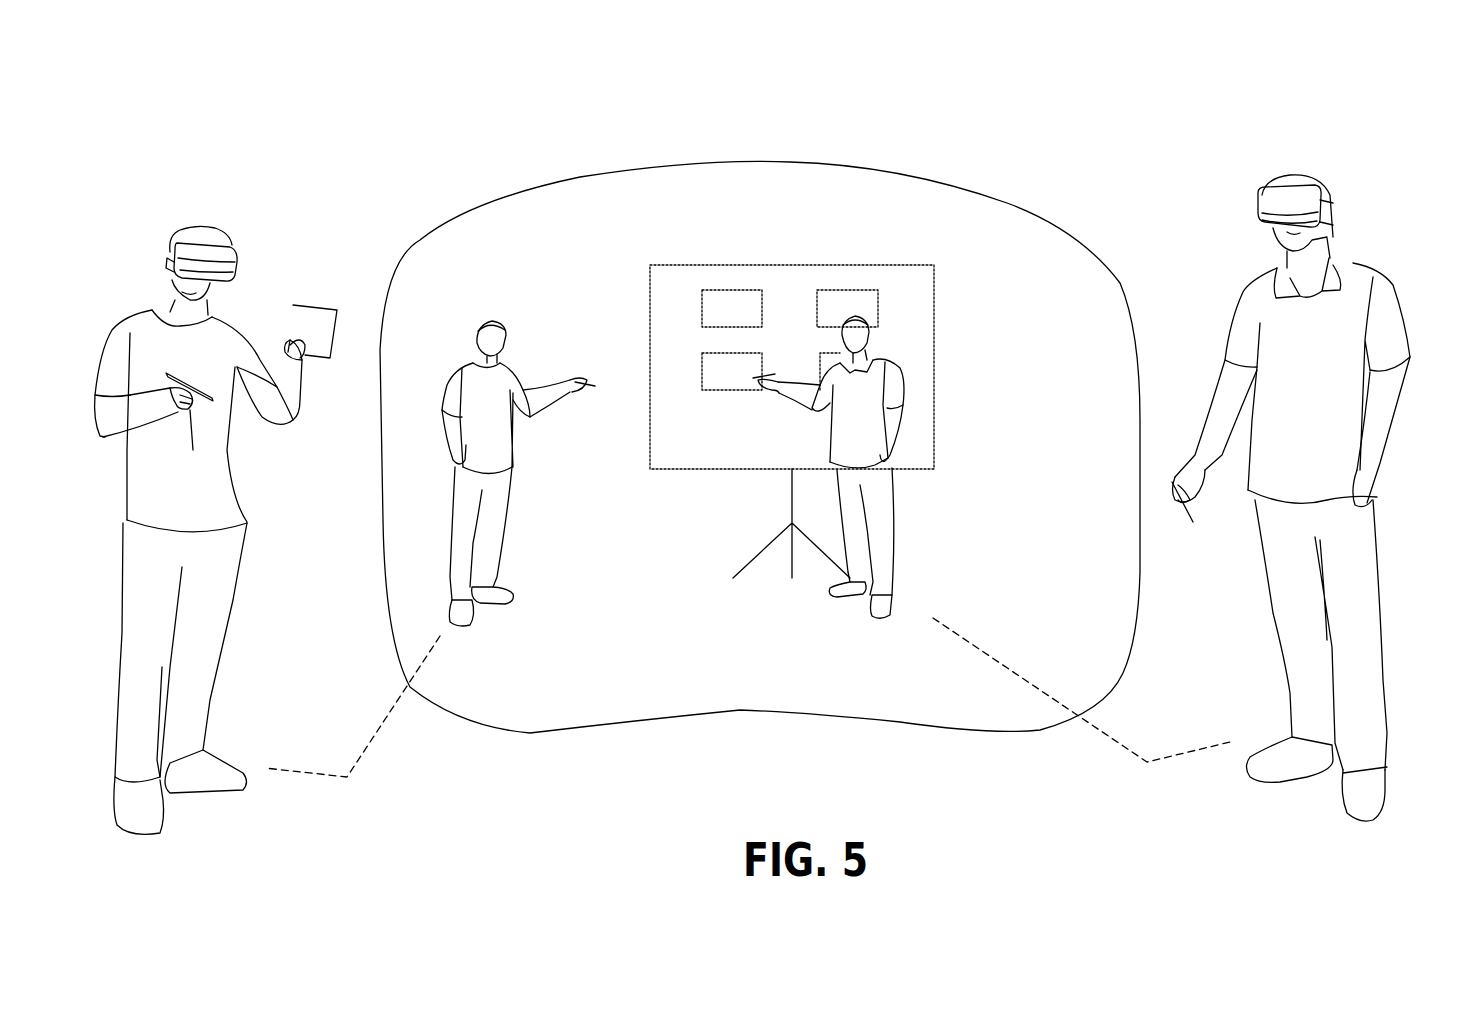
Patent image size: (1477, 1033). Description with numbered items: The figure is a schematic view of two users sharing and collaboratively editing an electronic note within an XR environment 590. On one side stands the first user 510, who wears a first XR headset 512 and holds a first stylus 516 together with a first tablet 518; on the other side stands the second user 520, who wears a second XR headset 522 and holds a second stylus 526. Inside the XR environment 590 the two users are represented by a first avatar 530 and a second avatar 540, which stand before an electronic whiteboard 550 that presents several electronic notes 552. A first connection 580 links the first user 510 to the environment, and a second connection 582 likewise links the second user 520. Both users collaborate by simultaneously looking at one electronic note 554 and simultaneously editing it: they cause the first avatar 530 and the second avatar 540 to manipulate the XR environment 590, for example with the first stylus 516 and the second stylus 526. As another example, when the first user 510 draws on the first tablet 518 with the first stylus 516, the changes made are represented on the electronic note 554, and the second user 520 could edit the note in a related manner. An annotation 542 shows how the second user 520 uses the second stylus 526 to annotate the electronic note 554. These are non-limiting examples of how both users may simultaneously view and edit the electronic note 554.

The first user 510 is at (143, 298).
The first XR headset 512 is at (245, 260).
The first stylus 516 is at (198, 407).
The first tablet 518 is at (320, 347).
The second user 520 is at (1353, 255).
The second XR headset 522 is at (1247, 220).
The second stylus 526 is at (1193, 523).
The first avatar 530 is at (495, 612).
The second avatar 540 is at (855, 603).
The annotation 542 is at (740, 386).
The electronic whiteboard 550 is at (945, 365).
The electronic notes 552 is at (641, 285).
The electronic note 554 is at (695, 372).
The first connection 580 is at (352, 729).
The second connection 582 is at (1081, 712).
The XR environment 590 is at (653, 165).